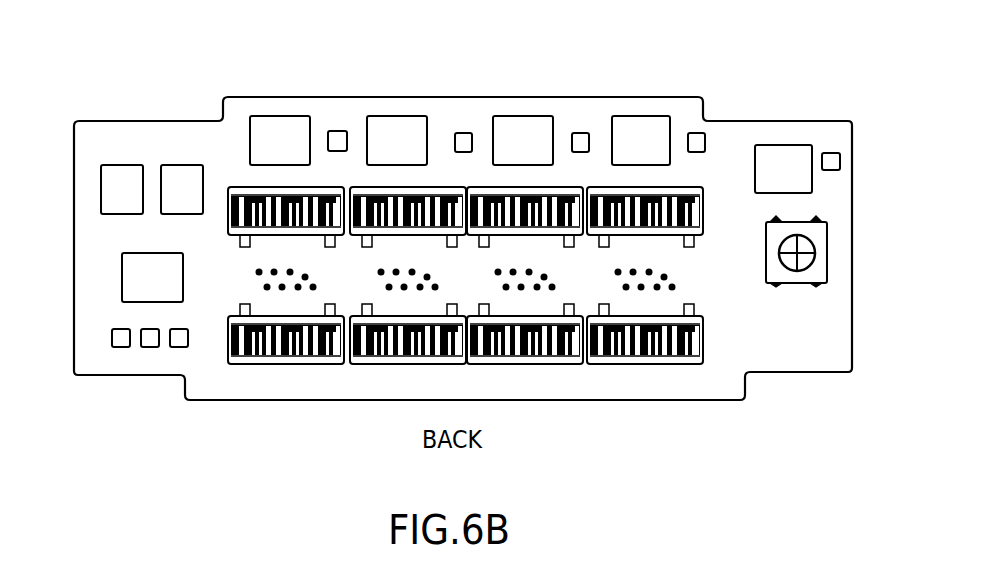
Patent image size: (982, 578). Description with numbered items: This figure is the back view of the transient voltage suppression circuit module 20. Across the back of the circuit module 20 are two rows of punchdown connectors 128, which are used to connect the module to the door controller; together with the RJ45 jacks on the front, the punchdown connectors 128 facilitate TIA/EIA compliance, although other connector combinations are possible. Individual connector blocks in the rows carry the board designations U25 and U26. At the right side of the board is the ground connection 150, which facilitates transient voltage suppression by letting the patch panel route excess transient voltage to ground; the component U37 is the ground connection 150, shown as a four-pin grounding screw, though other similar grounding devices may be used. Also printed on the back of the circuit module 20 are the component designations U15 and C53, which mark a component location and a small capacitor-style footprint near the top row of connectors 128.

The transient voltage suppression circuit module 20 is at (73, 247).
The connector U25 is at (258, 197).
The connector U26 is at (303, 358).
The capacitor C53 is at (339, 130).
The 110 punchdown connectors 128 is at (690, 205).
The ground connection component U37 is at (790, 237).
The ground connection 150 is at (779, 275).
The integrated circuit U15 is at (280, 140).